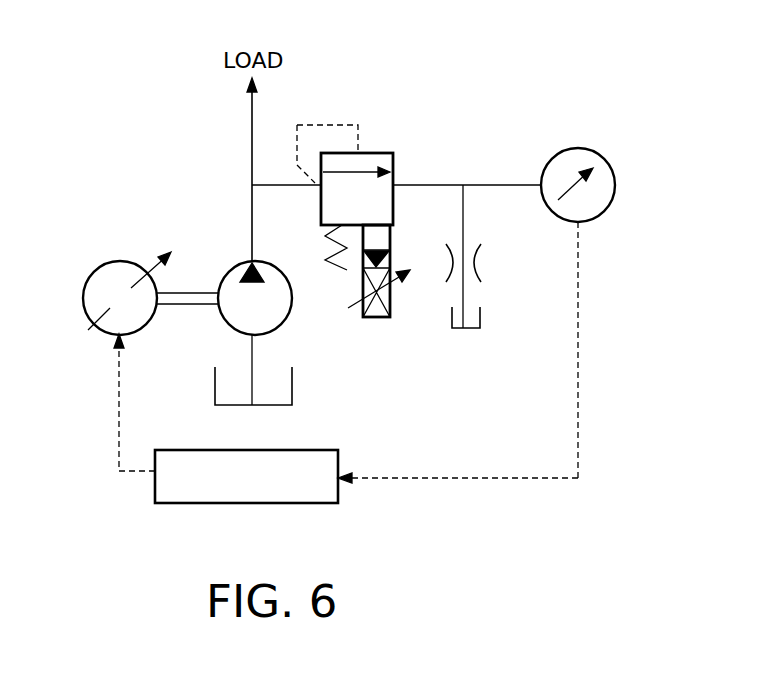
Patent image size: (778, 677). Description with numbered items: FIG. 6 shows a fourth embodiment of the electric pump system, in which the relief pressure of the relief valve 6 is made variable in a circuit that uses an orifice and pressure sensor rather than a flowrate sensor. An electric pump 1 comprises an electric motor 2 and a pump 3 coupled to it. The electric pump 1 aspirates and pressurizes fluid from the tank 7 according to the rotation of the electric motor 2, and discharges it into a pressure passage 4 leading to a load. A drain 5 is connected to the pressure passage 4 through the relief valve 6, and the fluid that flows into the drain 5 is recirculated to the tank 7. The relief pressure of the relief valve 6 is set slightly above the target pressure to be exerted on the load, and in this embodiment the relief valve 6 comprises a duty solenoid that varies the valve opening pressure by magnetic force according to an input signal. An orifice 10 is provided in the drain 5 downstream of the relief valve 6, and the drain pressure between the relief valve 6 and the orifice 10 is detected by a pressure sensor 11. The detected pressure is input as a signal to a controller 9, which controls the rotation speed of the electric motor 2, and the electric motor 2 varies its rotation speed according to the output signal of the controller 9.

The electric pump 1 is at (77, 238).
The electric motor 2 is at (103, 335).
The pump 3 is at (290, 325).
The pressure passage 4 is at (250, 172).
The drain 5 is at (435, 185).
The relief valve 6 is at (370, 153).
The tank 7 is at (292, 380).
The controller 9 is at (312, 503).
The orifice 10 is at (483, 258).
The pressure sensor 11 is at (605, 160).